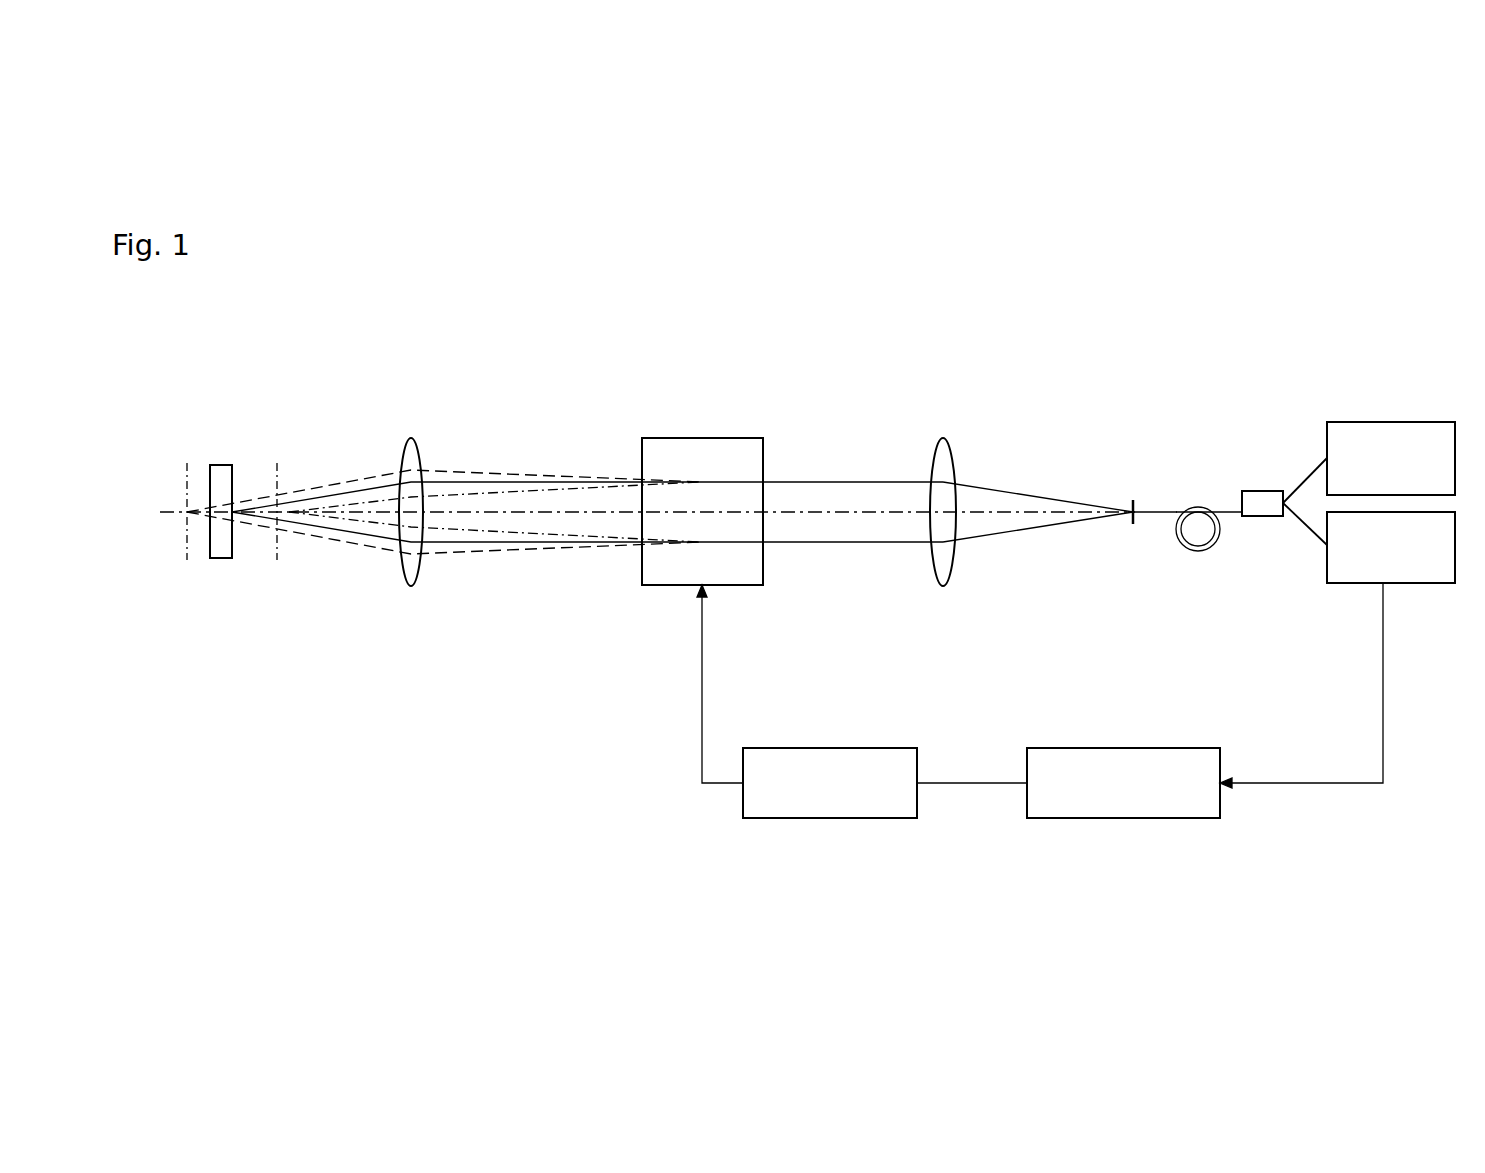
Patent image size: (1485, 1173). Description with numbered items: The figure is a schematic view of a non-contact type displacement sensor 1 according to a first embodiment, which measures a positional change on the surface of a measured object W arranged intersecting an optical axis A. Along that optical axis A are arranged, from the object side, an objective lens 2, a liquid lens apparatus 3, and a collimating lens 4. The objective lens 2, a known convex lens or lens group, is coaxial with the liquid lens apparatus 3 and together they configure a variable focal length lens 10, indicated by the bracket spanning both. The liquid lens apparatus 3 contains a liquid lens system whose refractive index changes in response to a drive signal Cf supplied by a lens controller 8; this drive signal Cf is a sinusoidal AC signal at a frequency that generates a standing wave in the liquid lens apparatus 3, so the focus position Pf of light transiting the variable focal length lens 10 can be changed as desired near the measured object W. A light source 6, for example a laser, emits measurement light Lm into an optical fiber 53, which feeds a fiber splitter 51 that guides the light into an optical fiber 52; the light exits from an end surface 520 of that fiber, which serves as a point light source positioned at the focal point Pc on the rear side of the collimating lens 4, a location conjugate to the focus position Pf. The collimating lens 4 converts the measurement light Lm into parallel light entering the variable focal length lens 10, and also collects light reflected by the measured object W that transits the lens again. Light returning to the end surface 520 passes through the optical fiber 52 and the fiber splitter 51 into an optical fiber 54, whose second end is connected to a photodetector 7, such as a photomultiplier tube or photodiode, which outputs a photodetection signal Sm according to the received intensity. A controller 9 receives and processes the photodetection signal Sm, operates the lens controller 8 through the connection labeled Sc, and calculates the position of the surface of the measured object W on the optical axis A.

The non-contact type displacement sensor 1 is at (1183, 338).
The objective lens 2 is at (422, 455).
The liquid lens apparatus 3 is at (765, 456).
The collimating lens 4 is at (955, 465).
The light source 6 is at (1380, 422).
The photodetector 7 is at (1425, 583).
The lens controller 8 is at (779, 748).
The controller 9 is at (1190, 748).
The variable focal length lens 10 is at (773, 358).
The fiber splitter 51 is at (1257, 490).
The optical fiber 52 is at (1209, 506).
The optical fiber 53 is at (1302, 477).
The optical fiber 54 is at (1303, 528).
The end surface 520 is at (1141, 507).
The measured object W is at (218, 465).
The focus position Pf is at (233, 510).
The measurement light Lm is at (358, 488).
The optical axis A is at (860, 511).
The focal point Pc is at (1129, 507).
The drive signal Cf is at (703, 684).
The control signal Sc is at (972, 765).
The photodetection signal Sm is at (1328, 685).